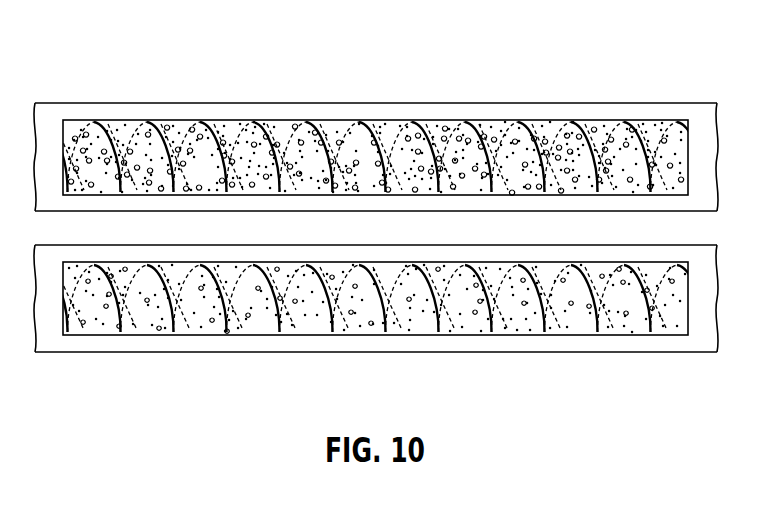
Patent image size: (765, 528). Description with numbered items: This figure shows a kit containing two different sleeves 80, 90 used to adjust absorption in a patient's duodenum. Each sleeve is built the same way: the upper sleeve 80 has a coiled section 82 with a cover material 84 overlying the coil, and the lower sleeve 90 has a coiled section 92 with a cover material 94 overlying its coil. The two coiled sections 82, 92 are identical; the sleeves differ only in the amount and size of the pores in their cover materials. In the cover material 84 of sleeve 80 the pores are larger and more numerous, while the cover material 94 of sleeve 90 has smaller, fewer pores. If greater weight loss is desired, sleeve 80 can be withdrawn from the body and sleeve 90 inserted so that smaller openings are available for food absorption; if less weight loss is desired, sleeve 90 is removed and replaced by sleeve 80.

The sleeve 80 is at (390, 122).
The coiled section 82 is at (498, 122).
The cover material 84 is at (290, 122).
The sleeve 90 is at (472, 333).
The coiled section 92 is at (543, 333).
The cover material 94 is at (575, 330).